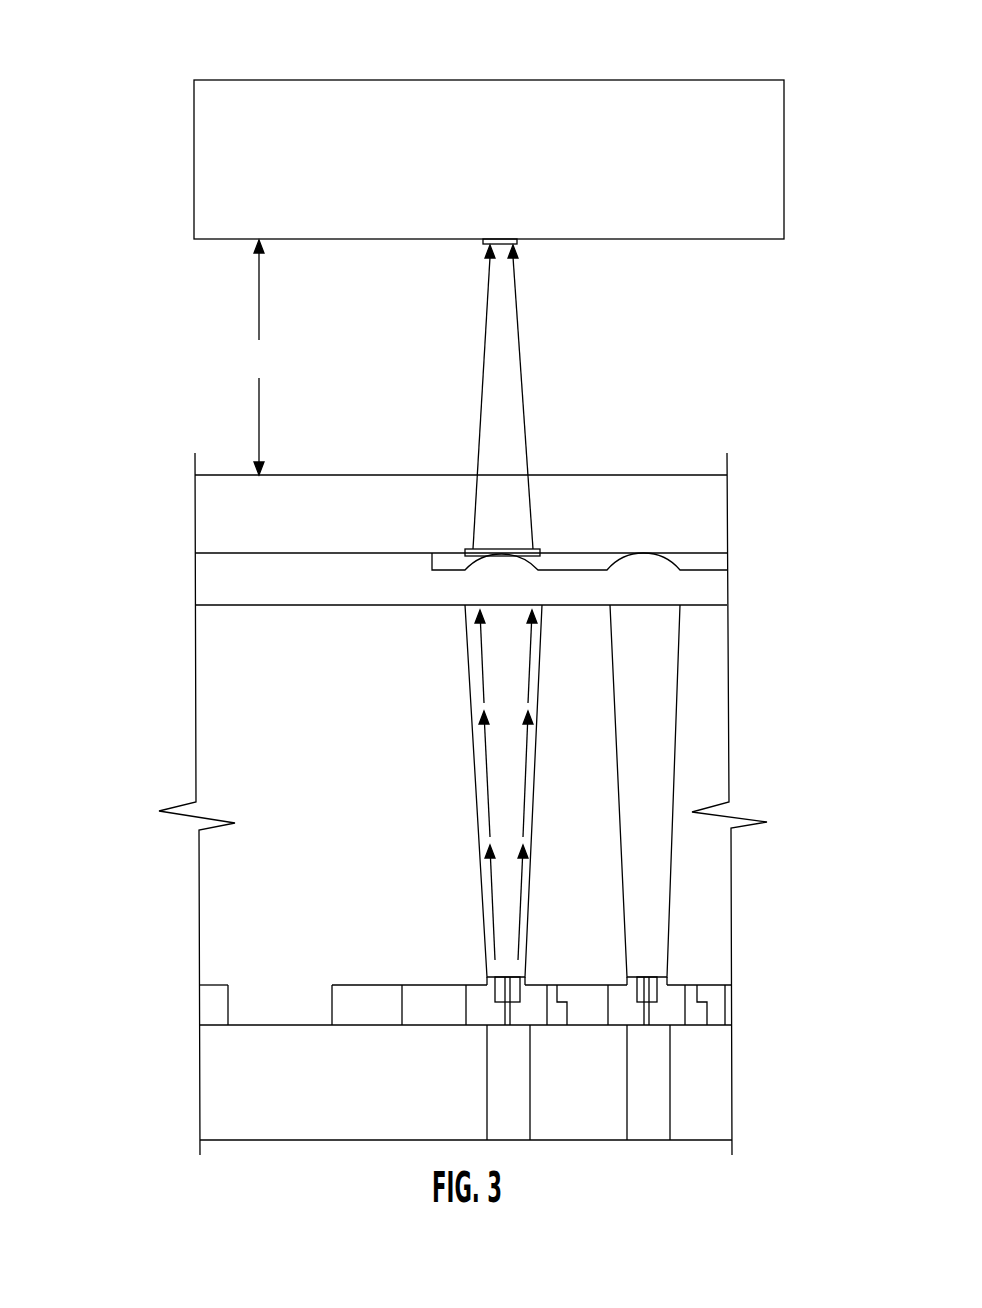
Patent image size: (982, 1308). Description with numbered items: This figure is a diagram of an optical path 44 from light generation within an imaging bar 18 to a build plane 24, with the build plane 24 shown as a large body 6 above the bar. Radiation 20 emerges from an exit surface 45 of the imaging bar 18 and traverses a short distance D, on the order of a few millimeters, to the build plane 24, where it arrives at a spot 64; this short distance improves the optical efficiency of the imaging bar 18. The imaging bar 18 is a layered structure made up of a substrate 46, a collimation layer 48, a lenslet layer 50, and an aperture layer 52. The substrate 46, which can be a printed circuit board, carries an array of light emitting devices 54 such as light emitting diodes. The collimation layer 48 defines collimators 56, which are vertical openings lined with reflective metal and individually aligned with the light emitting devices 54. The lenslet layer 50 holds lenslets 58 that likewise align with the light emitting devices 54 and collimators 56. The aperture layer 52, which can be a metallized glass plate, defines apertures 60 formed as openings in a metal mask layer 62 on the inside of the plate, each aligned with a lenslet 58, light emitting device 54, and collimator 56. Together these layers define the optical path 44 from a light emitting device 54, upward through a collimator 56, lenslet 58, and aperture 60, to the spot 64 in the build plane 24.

The substrate 6 is at (327, 143).
The imaging bar 18 is at (150, 471).
The radiation 20 is at (546, 403).
The build plane 24 is at (450, 240).
The optical path 44 is at (523, 393).
The exit surface 45 is at (687, 472).
The substrate 46 is at (708, 1087).
The collimation layer 48 is at (640, 791).
The lenslet layer 50 is at (504, 518).
The aperture layer 52 is at (497, 471).
The light emitting device 54 is at (508, 1023).
The collimator 56 is at (535, 767).
The lenslet 58 is at (528, 547).
The aperture 60 is at (490, 550).
The mask layer 62 is at (313, 553).
The spot 64 is at (502, 257).